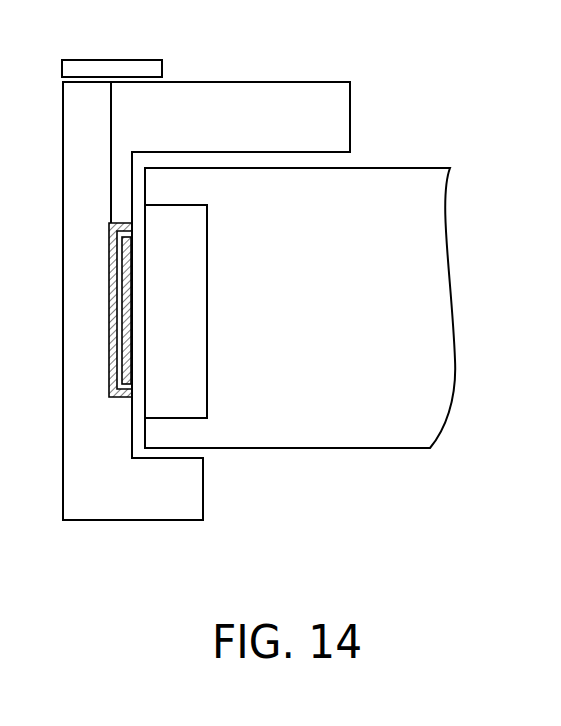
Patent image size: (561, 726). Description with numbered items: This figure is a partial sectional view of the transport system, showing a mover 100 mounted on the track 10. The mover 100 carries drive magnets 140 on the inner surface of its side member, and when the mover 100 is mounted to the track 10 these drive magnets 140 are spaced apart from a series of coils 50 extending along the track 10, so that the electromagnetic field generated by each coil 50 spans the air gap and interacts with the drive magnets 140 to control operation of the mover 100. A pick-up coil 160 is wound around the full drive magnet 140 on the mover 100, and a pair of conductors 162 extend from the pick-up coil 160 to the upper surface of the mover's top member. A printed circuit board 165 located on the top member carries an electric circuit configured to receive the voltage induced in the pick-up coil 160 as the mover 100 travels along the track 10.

The track 10 is at (336, 312).
The coils 50 is at (193, 312).
The mover 100 is at (108, 521).
The drive magnet 140 is at (125, 355).
The pick-up coil 160 is at (112, 258).
The conductors 162 is at (110, 176).
The printed circuit board (PCB) 165 is at (141, 62).